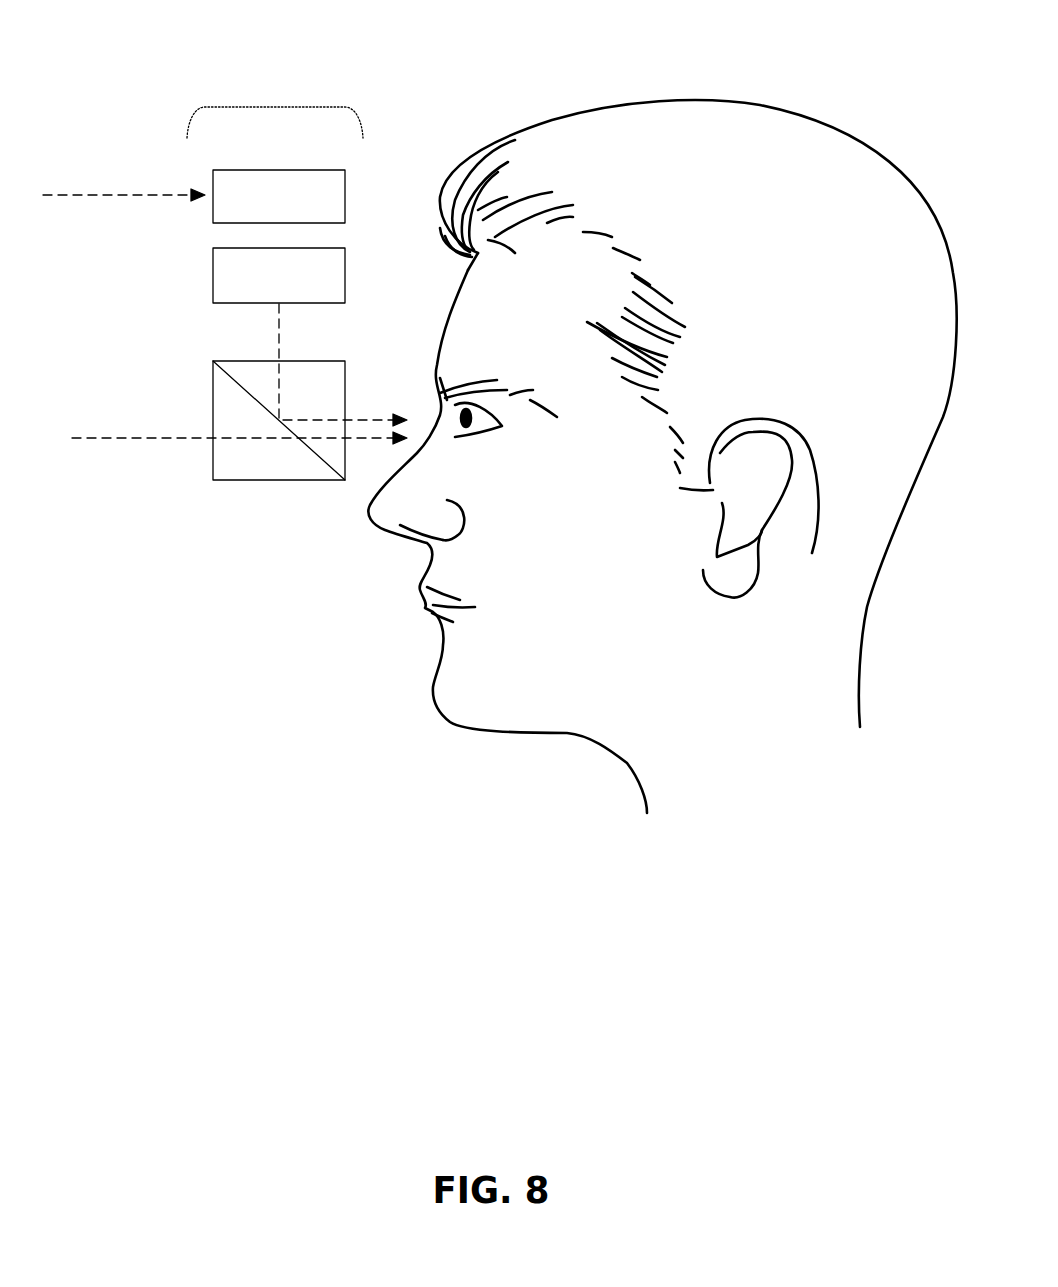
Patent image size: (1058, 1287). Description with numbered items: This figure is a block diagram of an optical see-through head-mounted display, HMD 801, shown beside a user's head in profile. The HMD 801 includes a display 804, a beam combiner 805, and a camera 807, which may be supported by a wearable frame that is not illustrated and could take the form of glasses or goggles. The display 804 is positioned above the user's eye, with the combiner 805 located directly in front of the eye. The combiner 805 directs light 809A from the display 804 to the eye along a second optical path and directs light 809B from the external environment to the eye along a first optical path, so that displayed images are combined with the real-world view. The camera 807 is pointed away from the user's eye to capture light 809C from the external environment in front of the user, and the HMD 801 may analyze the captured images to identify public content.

The optical see-through HMD 801 is at (275, 106).
The camera 807 is at (261, 220).
The display 804 is at (261, 300).
The beam combiner 805 is at (262, 481).
The light from the display 809A is at (279, 325).
The light from the external environment 809B is at (147, 440).
The light from the external environment captured by the camera 809C is at (107, 197).